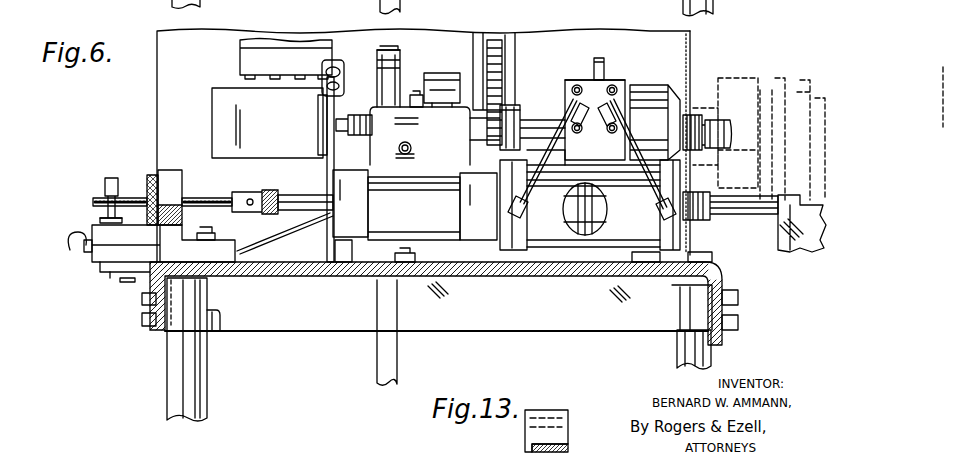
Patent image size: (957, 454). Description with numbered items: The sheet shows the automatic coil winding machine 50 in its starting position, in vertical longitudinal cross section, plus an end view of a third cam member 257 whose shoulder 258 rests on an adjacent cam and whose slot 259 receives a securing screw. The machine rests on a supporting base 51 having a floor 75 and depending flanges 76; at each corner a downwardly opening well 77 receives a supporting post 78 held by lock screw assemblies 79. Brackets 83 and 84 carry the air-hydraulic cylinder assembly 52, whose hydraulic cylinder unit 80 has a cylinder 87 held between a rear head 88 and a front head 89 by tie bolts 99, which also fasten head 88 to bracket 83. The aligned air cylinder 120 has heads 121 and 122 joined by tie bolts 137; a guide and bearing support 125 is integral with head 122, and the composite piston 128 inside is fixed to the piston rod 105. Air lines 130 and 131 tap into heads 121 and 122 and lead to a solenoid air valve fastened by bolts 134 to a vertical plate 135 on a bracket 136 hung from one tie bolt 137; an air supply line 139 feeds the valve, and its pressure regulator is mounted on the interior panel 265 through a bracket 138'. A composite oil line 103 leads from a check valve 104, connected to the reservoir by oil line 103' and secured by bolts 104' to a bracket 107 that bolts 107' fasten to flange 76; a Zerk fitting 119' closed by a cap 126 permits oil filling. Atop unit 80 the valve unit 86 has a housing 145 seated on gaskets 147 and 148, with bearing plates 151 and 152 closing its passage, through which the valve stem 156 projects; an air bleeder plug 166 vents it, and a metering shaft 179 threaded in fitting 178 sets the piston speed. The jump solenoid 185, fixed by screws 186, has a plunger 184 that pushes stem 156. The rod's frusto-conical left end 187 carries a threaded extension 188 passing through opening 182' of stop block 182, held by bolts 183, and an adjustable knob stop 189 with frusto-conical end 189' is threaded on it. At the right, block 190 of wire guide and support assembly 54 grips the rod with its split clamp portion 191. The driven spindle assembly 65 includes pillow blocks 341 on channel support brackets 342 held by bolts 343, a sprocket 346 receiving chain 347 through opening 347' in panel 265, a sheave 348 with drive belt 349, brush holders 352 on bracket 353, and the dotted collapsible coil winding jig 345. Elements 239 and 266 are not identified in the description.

In FIG. 6, the interior panel 265 is at (172, 42).
In FIG. 6, the back plate edge 266 is at (697, 47).
In FIG. 6, the hydraulic cylinder unit 80 is at (360, 345).
In FIG. 6, the composite oil line 103 is at (285, 261).
In FIG. 6, the supporting post 78 is at (176, 398).
In FIG. 6, the downwardly opening well 77 is at (214, 312).
In FIG. 6, the lock screw assemblies 79 is at (142, 318).
In FIG. 6, the depending flanges 76 is at (142, 300).
In FIG. 6, the supporting base 51 is at (150, 331).
In FIG. 6, the automatic coil winding machine 50 is at (106, 370).
In FIG. 6, the drive belt 349 is at (392, 55).
In FIG. 6, the sheave 348 is at (396, 66).
In FIG. 6, the bracket 138' is at (286, 40).
In FIG. 6, the brush holders 352 is at (322, 70).
In FIG. 6, the jump solenoid 185 is at (222, 92).
In FIG. 6, the screws 186 is at (323, 140).
In FIG. 6, the core or plunger 184 is at (336, 105).
In FIG. 6, the bearing plate 151 is at (372, 126).
In FIG. 6, the valve stem 156 is at (352, 132).
In FIG. 6, the bearing plate 152 is at (472, 120).
In FIG. 6, the bracket 353 is at (400, 114).
In FIG. 6, the cylinder 87 is at (399, 147).
In FIG. 6, the threaded fitting 178 is at (410, 148).
In FIG. 6, the metering shaft 179 is at (413, 150).
In FIG. 6, the air bleeder plug 166 is at (414, 92).
In FIG. 6, the valve unit 86 is at (463, 103).
In FIG. 6, the air-hydraulic cylinder assembly 52 is at (440, 77).
In FIG. 6, the pillow blocks 341 is at (445, 72).
In FIG. 6, the opening 347' is at (510, 76).
In FIG. 6, the chain 347 is at (538, 60).
In FIG. 6, the driven spindle assembly 65 is at (508, 105).
In FIG. 6, the sprocket 346 is at (527, 95).
In FIG. 6, the bolts 134 is at (577, 84).
In FIG. 6, the vertical plate 135 is at (607, 82).
In FIG. 6, the air supply line 139 is at (600, 58).
In FIG. 6, the bracket 136 is at (578, 140).
In FIG. 6, the tie bolts 137 is at (560, 145).
In FIG. 6, the air line 131 is at (640, 135).
In FIG. 6, the guide and bearing support 125 is at (705, 230).
In FIG. 6, the composite piston 128 is at (570, 196).
In FIG. 6, the gasket 147 is at (342, 210).
In FIG. 6, the housing 145 is at (395, 200).
In FIG. 6, the gasket 148 is at (480, 230).
In FIG. 6, the tie bolts 99 is at (462, 177).
In FIG. 6, the head 122 is at (645, 230).
In FIG. 6, the air line 130 is at (563, 148).
In FIG. 6, the rear head 88 is at (340, 235).
In FIG. 6, the front head 89 is at (478, 238).
In FIG. 6, the bolts 343 is at (430, 278).
In FIG. 6, the support brackets 342 is at (650, 327).
In FIG. 6, the head 121 is at (522, 265).
In FIG. 6, the supporting floor 75 is at (495, 280).
In FIG. 6, the cylinder 120 is at (608, 265).
In FIG. 6, the bracket 84 is at (685, 268).
In FIG. 6, the bracket 83 is at (353, 265).
In FIG. 6, the piston rod 105 is at (306, 196).
In FIG. 6, the block 190 is at (787, 252).
In FIG. 6, the split clamp portion 191 is at (788, 230).
In FIG. 6, the wire guide and support assembly 54 is at (800, 258).
In FIG. 6, the collapsible coil winding jig 345 is at (783, 80).
In FIG. 6, the stop block 182 is at (163, 243).
In FIG. 6, the opening 182' is at (179, 141).
In FIG. 6, the bolts 183 is at (205, 240).
In FIG. 6, the cap 126 is at (108, 186).
In FIG. 6, the threaded reduced extension 188 is at (92, 200).
In FIG. 6, the adjustable knob stop 189 is at (139, 191).
In FIG. 6, the frusto-conical end 189' is at (185, 182).
In FIG. 6, the Zerk fitting 119' is at (82, 221).
In FIG. 6, the coupling 239 is at (265, 190).
In FIG. 6, the frusto-conical left end 187 is at (240, 212).
In FIG. 6, the oil line 103' is at (57, 251).
In FIG. 6, the check valve 104 is at (104, 277).
In FIG. 6, the bracket 107 is at (66, 289).
In FIG. 6, the bolts 107' is at (118, 289).
In FIG. 6, the bolts 104' is at (70, 304).
In FIG. 13, the third cam member 257 is at (548, 410).
In FIG. 13, the slot 259 is at (572, 424).
In FIG. 13, the shoulder 258 is at (530, 446).